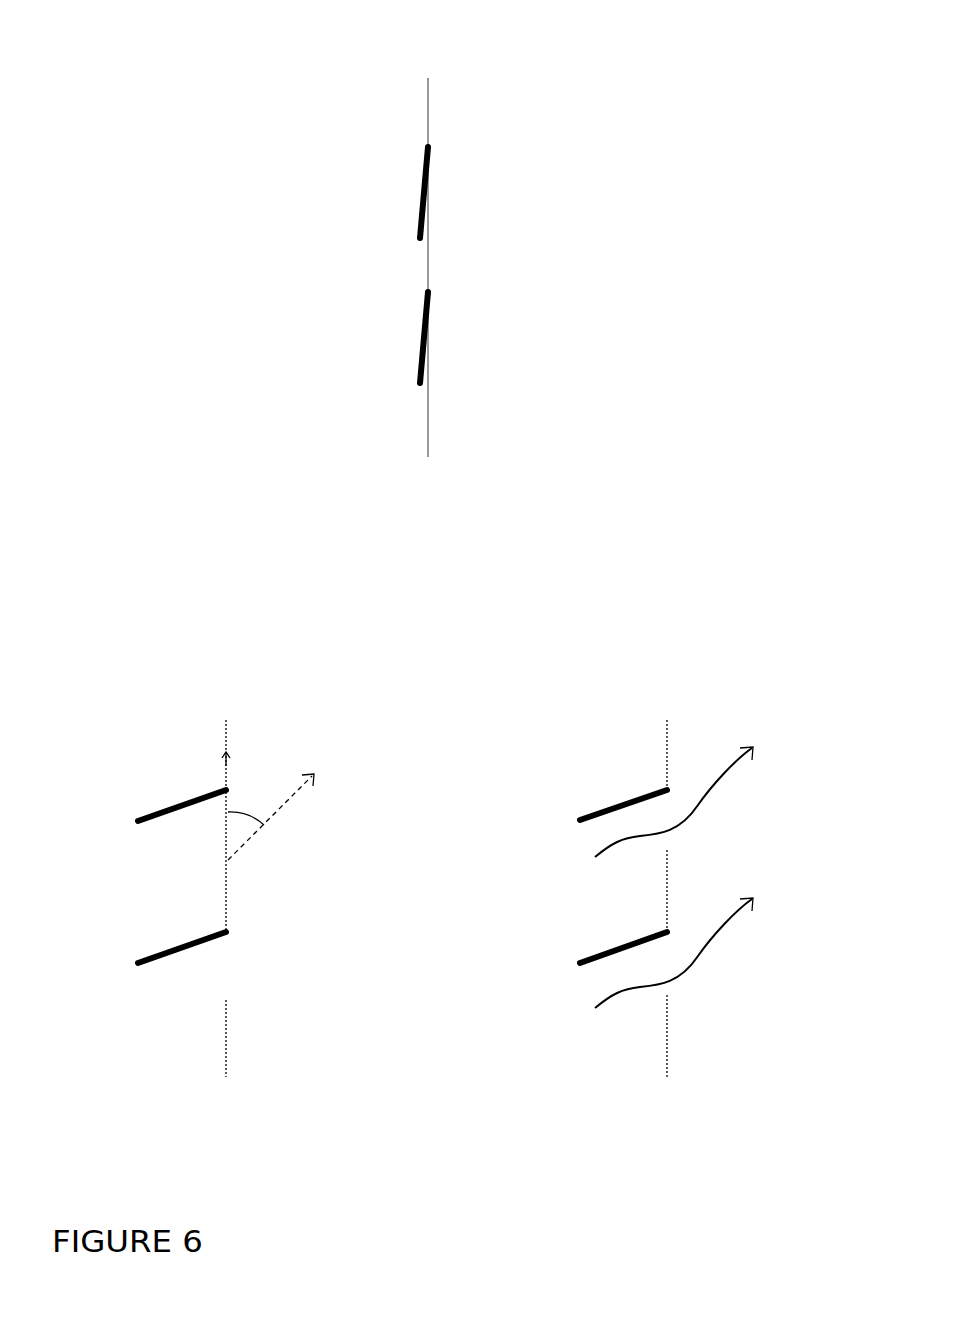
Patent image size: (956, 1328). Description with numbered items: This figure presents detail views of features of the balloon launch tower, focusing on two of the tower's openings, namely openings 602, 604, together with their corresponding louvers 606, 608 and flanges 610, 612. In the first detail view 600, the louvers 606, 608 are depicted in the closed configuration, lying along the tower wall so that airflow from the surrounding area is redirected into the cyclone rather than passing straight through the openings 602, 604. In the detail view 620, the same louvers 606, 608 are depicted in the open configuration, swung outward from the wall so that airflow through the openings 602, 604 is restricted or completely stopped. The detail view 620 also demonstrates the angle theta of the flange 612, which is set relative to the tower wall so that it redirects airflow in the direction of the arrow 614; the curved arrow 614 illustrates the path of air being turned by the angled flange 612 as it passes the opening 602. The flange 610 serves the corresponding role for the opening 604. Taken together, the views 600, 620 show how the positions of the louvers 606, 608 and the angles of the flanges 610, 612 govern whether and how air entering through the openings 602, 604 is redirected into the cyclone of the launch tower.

The detail view 600 is at (466, 73).
The opening 602 is at (428, 222).
The opening 604 is at (428, 366).
The louver 606 is at (421, 176).
The louver 608 is at (421, 335).
The flange 610 is at (266, 717).
The flange 612 is at (428, 222).
The arrow 614 is at (746, 753).
The detail view 620 is at (693, 717).